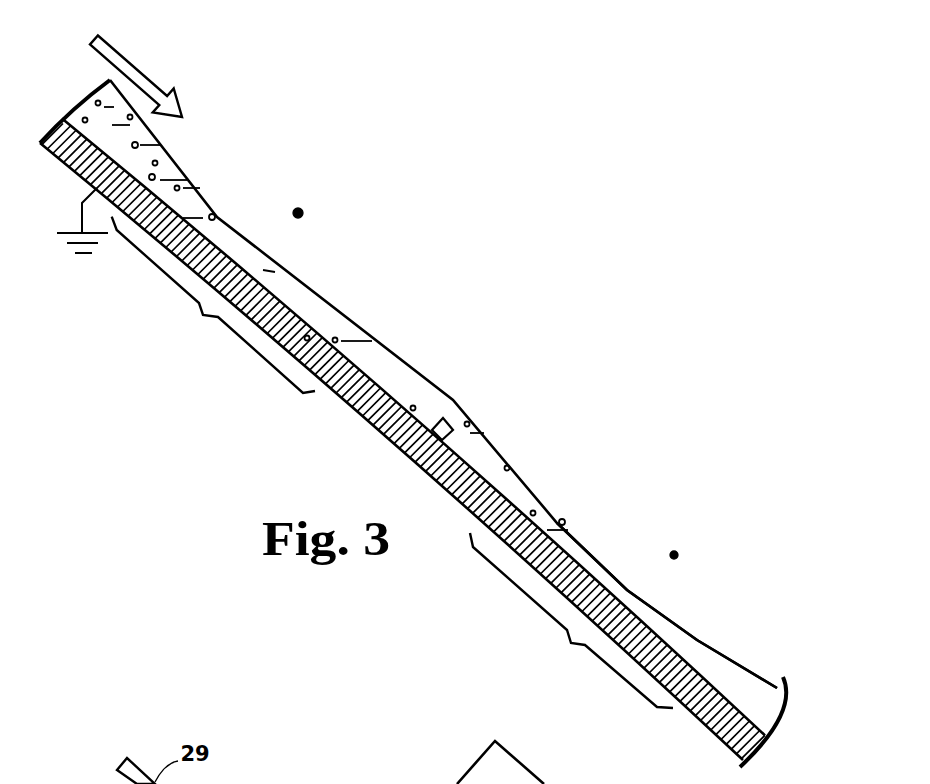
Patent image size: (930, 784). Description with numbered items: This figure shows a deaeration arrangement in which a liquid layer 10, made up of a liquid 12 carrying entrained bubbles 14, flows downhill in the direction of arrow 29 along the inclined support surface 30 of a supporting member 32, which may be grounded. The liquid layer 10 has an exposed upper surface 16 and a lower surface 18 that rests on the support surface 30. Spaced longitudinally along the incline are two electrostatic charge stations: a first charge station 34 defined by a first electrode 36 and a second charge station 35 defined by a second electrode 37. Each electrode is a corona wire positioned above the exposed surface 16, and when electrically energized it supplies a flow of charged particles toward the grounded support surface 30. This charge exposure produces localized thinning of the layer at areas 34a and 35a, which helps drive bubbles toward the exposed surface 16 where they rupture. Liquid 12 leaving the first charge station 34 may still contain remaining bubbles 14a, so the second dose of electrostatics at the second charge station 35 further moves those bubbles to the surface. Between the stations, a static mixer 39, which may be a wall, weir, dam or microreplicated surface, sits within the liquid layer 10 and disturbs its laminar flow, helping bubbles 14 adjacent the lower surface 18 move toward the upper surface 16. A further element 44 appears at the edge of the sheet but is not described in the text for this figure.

The liquid layer 10 is at (752, 695).
The liquid 12 is at (749, 682).
The bubbles 14 is at (137, 144).
The remaining bubbles 14a is at (414, 405).
The exposed upper surface 16 is at (340, 338).
The lower surface 18 is at (307, 336).
The arrow 29 is at (127, 53).
The inclined support surface 30 is at (370, 385).
The supporting member 32 is at (761, 749).
The first charge station 34 is at (305, 150).
The localized thinning area 34a is at (213, 305).
The second charge station 35 is at (647, 492).
The localized thinning area 35a is at (571, 620).
The first electrode 36 is at (301, 208).
The second electrode 37 is at (678, 553).
The static mixer 39 is at (450, 412).
The component 44 is at (414, 762).